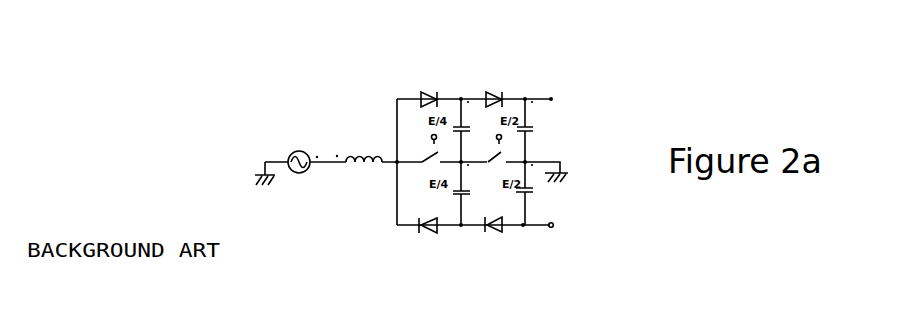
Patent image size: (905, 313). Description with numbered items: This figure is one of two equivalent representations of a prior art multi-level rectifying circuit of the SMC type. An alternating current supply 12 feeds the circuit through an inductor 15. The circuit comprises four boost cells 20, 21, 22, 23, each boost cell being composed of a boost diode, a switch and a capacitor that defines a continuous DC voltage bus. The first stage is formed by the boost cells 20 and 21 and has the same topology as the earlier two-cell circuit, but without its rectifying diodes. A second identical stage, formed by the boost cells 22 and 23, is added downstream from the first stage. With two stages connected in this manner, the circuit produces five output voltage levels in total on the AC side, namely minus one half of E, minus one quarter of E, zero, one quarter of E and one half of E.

The alternating current supply 12 is at (293, 152).
The inductor 15 is at (363, 143).
The boost cell 20 is at (402, 100).
The boost cell 21 is at (413, 213).
The boost cell 22 is at (511, 96).
The boost cell 23 is at (515, 220).